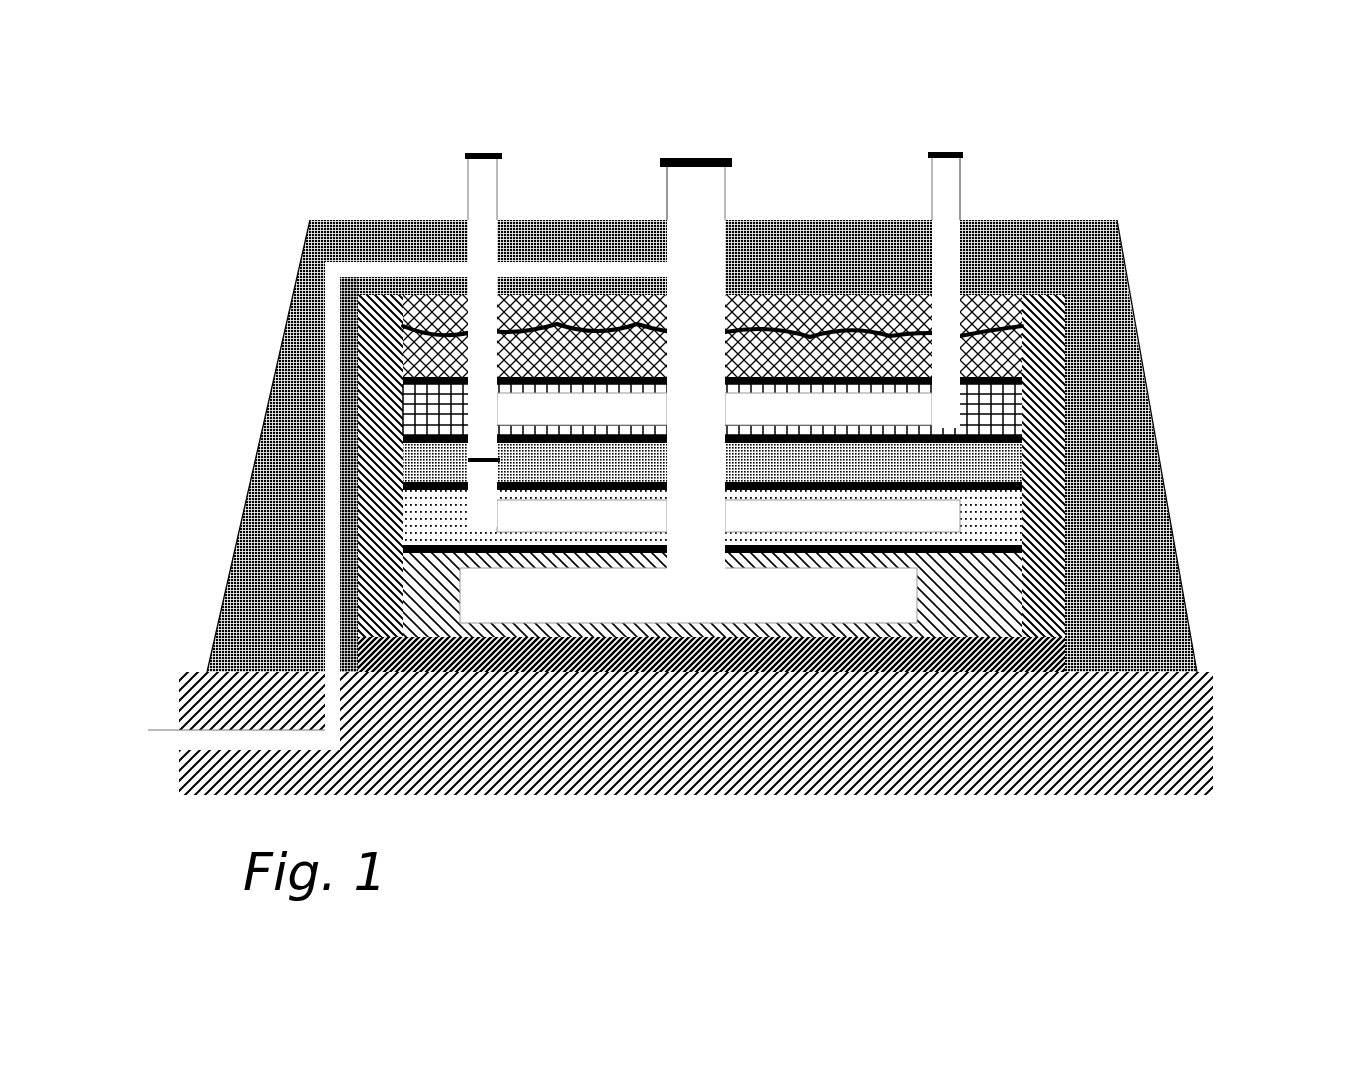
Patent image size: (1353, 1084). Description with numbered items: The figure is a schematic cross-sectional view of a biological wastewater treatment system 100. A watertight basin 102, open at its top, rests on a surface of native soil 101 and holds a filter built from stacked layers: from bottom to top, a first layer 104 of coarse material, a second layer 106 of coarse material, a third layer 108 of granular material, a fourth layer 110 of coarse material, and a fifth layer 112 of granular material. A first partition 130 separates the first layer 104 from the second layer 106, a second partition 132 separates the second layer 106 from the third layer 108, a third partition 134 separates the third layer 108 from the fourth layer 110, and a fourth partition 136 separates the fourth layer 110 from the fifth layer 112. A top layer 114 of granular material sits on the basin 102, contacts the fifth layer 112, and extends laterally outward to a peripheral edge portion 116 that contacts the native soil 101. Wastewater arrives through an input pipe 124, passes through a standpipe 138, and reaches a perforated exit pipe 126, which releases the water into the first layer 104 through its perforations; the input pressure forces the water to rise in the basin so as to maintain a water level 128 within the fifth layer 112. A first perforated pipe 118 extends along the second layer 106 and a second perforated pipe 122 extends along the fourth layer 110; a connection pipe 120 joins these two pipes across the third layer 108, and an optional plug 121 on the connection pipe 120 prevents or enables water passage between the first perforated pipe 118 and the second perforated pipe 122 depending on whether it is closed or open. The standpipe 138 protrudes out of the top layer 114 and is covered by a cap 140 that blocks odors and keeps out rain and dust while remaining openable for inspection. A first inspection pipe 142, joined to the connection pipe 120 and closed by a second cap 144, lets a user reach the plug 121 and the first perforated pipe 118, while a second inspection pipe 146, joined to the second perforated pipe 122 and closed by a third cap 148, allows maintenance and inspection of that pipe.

The biological wastewater treatment system 100 is at (253, 112).
The native soil 101 is at (1187, 732).
The watertight basin 102 is at (813, 656).
The first layer 104 is at (983, 595).
The second layer 106 is at (983, 513).
The third layer 108 is at (983, 460).
The fourth layer 110 is at (983, 398).
The fifth layer 112 is at (993, 313).
The top layer 114 is at (362, 232).
The peripheral edge portion 116 is at (210, 672).
The first perforated pipe 118 is at (923, 518).
The connection pipe 120 is at (480, 482).
The plug 121 is at (490, 462).
The second perforated pipe 122 is at (745, 410).
The input pipe 124 is at (330, 313).
The perforated exit pipe 126 is at (735, 597).
The water level 128 is at (818, 322).
The first partition 130 is at (413, 550).
The second partition 132 is at (410, 488).
The third partition 134 is at (410, 440).
The fourth partition 136 is at (410, 380).
The standpipe 138 is at (678, 195).
The cap 140 is at (688, 160).
The first inspection pipe 142 is at (487, 178).
The second cap 144 is at (468, 157).
The second inspection pipe 146 is at (948, 219).
The third cap 148 is at (948, 152).